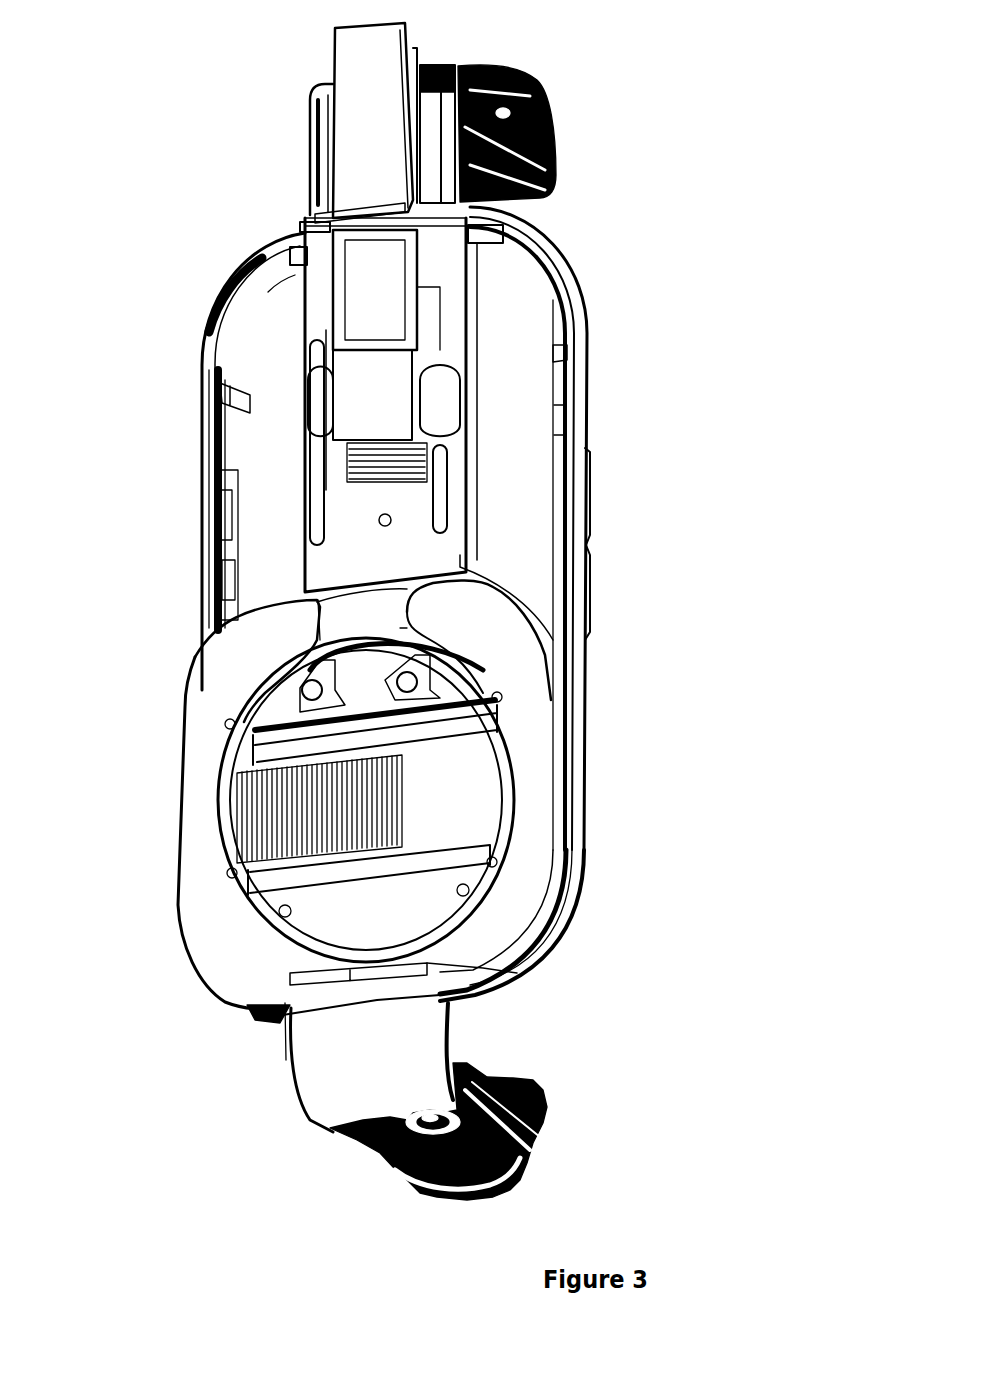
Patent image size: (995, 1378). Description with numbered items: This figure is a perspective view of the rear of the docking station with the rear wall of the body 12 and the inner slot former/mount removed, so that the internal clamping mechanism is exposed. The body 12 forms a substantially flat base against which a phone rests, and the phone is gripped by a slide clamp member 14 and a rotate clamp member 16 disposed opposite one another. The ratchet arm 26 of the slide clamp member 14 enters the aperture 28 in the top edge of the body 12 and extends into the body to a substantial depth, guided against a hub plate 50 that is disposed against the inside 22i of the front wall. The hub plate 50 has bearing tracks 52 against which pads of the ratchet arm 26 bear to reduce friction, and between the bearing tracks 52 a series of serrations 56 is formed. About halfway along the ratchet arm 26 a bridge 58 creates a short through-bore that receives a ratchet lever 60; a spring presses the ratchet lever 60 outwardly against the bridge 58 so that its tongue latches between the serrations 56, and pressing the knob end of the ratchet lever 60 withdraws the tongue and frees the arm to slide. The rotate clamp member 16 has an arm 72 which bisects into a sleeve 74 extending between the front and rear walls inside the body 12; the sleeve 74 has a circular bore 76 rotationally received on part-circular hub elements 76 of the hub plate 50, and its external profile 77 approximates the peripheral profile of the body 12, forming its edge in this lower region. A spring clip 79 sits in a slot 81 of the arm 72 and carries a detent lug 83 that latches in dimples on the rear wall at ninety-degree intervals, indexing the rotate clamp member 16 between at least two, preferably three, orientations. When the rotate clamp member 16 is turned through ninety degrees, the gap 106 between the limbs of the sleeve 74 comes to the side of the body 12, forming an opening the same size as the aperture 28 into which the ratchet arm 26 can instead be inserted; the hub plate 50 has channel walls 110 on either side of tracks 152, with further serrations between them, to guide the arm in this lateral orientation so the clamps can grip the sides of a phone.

The body 12 is at (592, 544).
The slide clamp member 14 is at (548, 135).
The rotate clamp member 16 is at (448, 1180).
The inside of front wall 22i is at (253, 320).
The ratchet arm 26 is at (437, 93).
The aperture 28 is at (300, 228).
The hub plate 50 is at (393, 498).
The bearing tracks 52 is at (325, 517).
The serrations 56 is at (355, 462).
The bridge 58 is at (318, 222).
The ratchet lever 60 is at (360, 58).
The arm 72 is at (418, 1025).
The sleeve 74 is at (200, 815).
The circular bore / hub elements 76 is at (257, 703).
The external profile 77 is at (550, 778).
The spring clip 79 is at (293, 977).
The slot 81 is at (525, 986).
The detent lug 83 is at (357, 968).
The gap 106 is at (322, 623).
The channel walls 110 is at (457, 712).
The tracks 152 is at (290, 748).